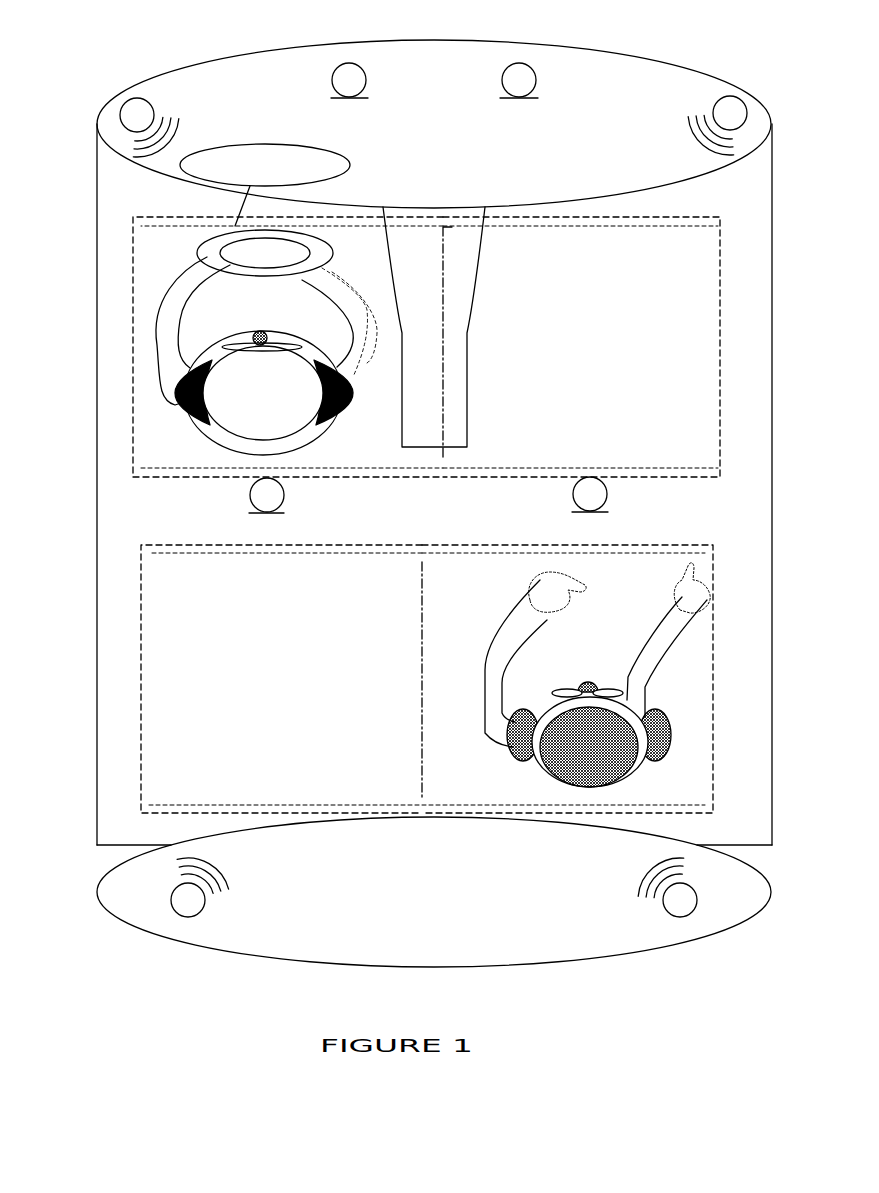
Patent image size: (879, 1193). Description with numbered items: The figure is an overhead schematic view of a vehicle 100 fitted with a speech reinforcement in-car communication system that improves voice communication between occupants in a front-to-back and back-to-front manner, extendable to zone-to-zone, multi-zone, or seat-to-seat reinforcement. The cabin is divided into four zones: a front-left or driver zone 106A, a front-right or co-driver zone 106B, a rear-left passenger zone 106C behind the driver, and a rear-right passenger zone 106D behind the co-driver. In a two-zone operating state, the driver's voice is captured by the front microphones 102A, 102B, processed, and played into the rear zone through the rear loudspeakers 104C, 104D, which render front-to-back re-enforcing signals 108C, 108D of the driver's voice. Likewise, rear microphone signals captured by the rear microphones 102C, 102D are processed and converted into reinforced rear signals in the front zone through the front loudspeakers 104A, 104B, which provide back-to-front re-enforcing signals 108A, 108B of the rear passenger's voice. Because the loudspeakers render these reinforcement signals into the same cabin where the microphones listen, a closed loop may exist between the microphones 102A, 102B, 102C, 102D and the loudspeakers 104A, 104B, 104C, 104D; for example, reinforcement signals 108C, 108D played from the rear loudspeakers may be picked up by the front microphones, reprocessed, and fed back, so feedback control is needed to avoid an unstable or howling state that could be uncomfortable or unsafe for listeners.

The vehicle 100 is at (233, 24).
The microphone 102A is at (360, 100).
The microphone 102B is at (507, 100).
The microphone 102C is at (250, 505).
The microphone 102D is at (573, 506).
The loudspeaker 104A is at (130, 99).
The loudspeaker 104B is at (737, 97).
The loudspeaker 104C is at (178, 914).
The loudspeaker 104D is at (690, 913).
The front-left zone 106A is at (130, 315).
The front-right zone 106B is at (705, 352).
The rear-left zone 106C is at (165, 612).
The rear-right zone 106D is at (703, 665).
The back-to-front re-enforcing signal 108A is at (110, 123).
The back-to-front re-enforcing signal 108B is at (693, 133).
The front-to-back re-enforcing signal 108C is at (220, 888).
The front-to-back re-enforcing signal 108D is at (653, 890).